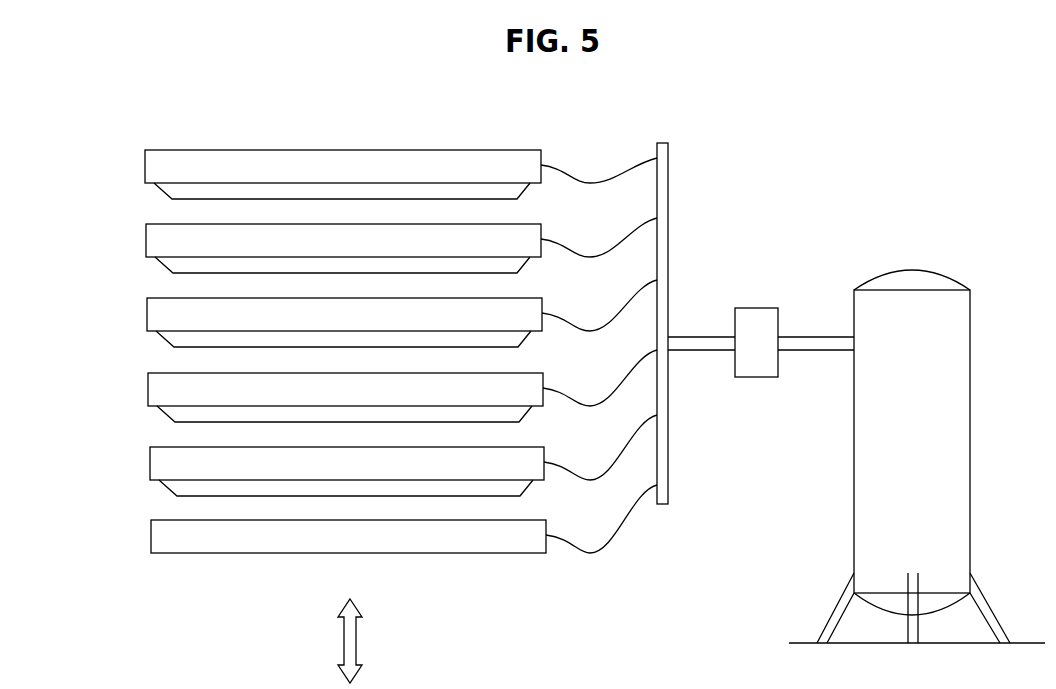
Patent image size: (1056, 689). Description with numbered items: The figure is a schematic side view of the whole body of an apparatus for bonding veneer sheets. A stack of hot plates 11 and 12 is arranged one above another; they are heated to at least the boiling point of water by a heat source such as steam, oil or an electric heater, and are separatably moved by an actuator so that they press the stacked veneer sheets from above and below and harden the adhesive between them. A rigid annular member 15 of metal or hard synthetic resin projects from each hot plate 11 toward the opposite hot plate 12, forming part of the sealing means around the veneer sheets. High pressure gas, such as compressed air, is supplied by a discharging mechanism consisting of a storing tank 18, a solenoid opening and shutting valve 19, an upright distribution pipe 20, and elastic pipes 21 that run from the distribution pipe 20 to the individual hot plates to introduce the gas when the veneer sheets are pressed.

The hot plate 11 is at (153, 167).
The hot plate 12 is at (160, 243).
The rigid annular member 15 is at (173, 195).
The storing tank 18 is at (927, 315).
The solenoid opening and shutting valve 19 is at (768, 306).
The distribution pipe 20 is at (665, 248).
The elastic pipe 21 is at (612, 176).